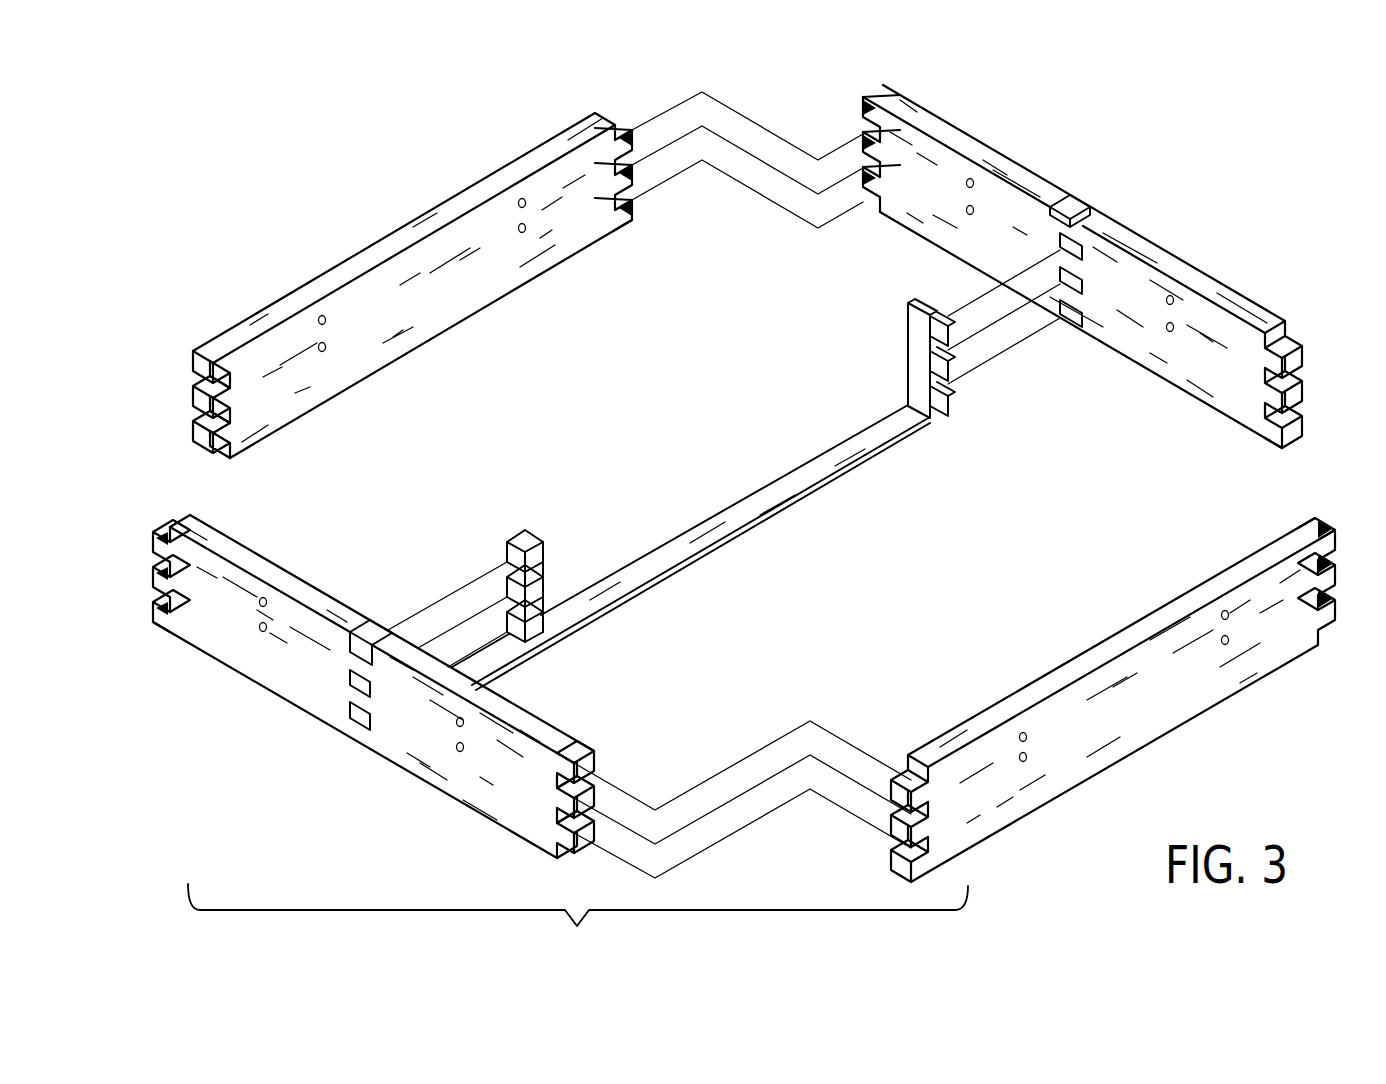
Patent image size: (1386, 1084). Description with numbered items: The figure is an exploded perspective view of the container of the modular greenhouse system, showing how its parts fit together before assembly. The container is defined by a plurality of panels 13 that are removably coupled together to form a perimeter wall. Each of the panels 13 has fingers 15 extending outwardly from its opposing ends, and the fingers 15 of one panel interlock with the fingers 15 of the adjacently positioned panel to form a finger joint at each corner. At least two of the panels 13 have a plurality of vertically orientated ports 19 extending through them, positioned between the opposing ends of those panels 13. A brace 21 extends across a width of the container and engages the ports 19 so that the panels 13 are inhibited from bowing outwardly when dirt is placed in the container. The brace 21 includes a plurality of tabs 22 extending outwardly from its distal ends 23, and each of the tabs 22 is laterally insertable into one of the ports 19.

The panels 13 is at (392, 243).
The fingers 15 is at (633, 205).
The ports 19 is at (1060, 197).
The brace 21 is at (740, 510).
The tabs 22 is at (947, 410).
The distal ends 23 is at (905, 350).